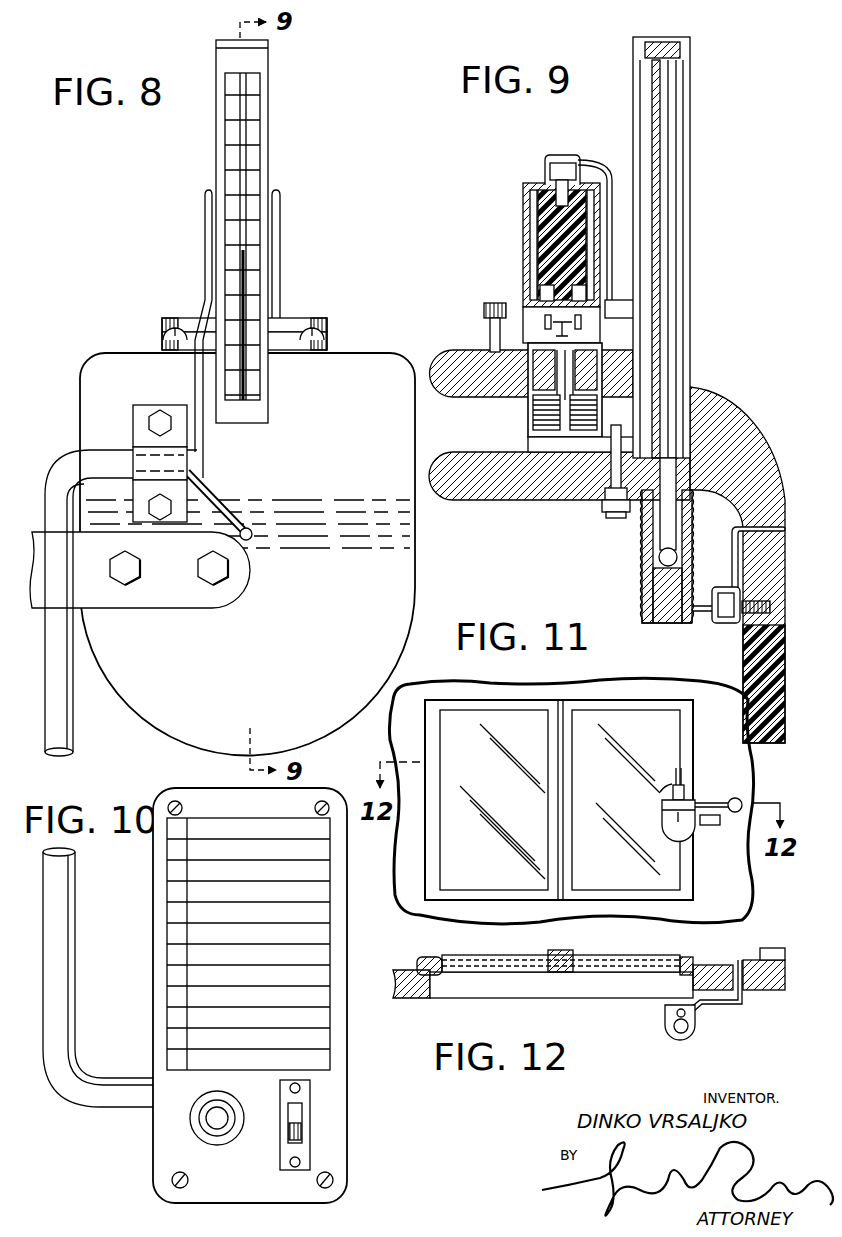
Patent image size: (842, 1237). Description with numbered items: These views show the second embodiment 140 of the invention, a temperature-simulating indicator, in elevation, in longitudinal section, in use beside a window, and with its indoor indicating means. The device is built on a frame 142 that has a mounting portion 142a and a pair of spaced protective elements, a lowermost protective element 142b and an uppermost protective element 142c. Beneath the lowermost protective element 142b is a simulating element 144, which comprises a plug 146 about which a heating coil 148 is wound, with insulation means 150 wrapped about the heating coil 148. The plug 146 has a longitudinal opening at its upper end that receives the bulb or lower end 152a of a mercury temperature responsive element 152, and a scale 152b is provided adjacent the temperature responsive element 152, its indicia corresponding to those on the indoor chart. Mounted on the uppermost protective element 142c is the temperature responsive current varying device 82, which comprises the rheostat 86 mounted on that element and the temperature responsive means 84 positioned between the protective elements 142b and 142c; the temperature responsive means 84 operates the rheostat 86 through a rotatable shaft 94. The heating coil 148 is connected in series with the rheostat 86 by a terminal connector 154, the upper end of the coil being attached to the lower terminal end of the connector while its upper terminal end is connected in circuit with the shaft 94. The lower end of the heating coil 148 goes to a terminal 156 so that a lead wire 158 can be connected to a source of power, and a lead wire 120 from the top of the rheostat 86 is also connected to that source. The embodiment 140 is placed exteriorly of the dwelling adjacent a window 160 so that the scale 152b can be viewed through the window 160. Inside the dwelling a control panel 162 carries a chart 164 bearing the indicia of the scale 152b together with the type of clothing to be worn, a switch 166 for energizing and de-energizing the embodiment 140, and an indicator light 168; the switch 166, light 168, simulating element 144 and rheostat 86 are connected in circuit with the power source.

In FIG. 8, the second embodiment 140 is at (104, 330).
In FIG. 11, the second embodiment 140 is at (702, 796).
In FIG. 12, the second embodiment 140 is at (676, 1042).
In FIG. 8, the frame 142 is at (84, 394).
In FIG. 9, the frame 142 is at (742, 472).
In FIG. 8, the mounting portion 142a is at (382, 660).
In FIG. 9, the mounting portion 142a is at (784, 626).
In FIG. 9, the lowermost protective element 142b is at (462, 482).
In FIG. 9, the uppermost protective element 142c is at (452, 368).
In FIG. 8, the mercury temperature responsive element 152 is at (233, 162).
In FIG. 9, the mercury temperature responsive element 152 is at (666, 306).
In FIG. 11, the mercury temperature responsive element 152 is at (674, 775).
In FIG. 12, the mercury temperature responsive element 152 is at (687, 1016).
In FIG. 9, the bulb or lower end 152a is at (660, 556).
In FIG. 8, the scale 152b is at (262, 182).
In FIG. 9, the scale 152b is at (656, 118).
In FIG. 8, the lead wire 120 is at (205, 233).
In FIG. 9, the lead wire 120 is at (612, 176).
In FIG. 11, the lead wire 120 is at (664, 796).
In FIG. 12, the lead wire 120 is at (668, 1032).
In FIG. 8, the lead wire 158 is at (233, 514).
In FIG. 9, the lead wire 158 is at (768, 527).
In FIG. 10, the lead wire 158 is at (62, 905).
In FIG. 9, the rheostat 86 is at (510, 196).
In FIG. 9, the temperature responsive current varying device 82 is at (485, 290).
In FIG. 9, the temperature responsive means 84 is at (518, 426).
In FIG. 9, the rotatable shaft 94 is at (530, 410).
In FIG. 9, the terminal connector 154 is at (614, 478).
In FIG. 9, the heating coil 148 is at (706, 552).
In FIG. 9, the insulation means 150 is at (658, 575).
In FIG. 9, the simulating element 144 is at (646, 600).
In FIG. 9, the plug 146 is at (664, 626).
In FIG. 9, the terminal 156 is at (718, 626).
In FIG. 11, the window 160 is at (610, 718).
In FIG. 12, the window 160 is at (626, 956).
In FIG. 10, the control panel 162 is at (340, 1100).
In FIG. 12, the control panel 162 is at (771, 948).
In FIG. 10, the chart 164 is at (312, 860).
In FIG. 10, the switch 166 is at (306, 1148).
In FIG. 10, the indicator light 168 is at (214, 1124).